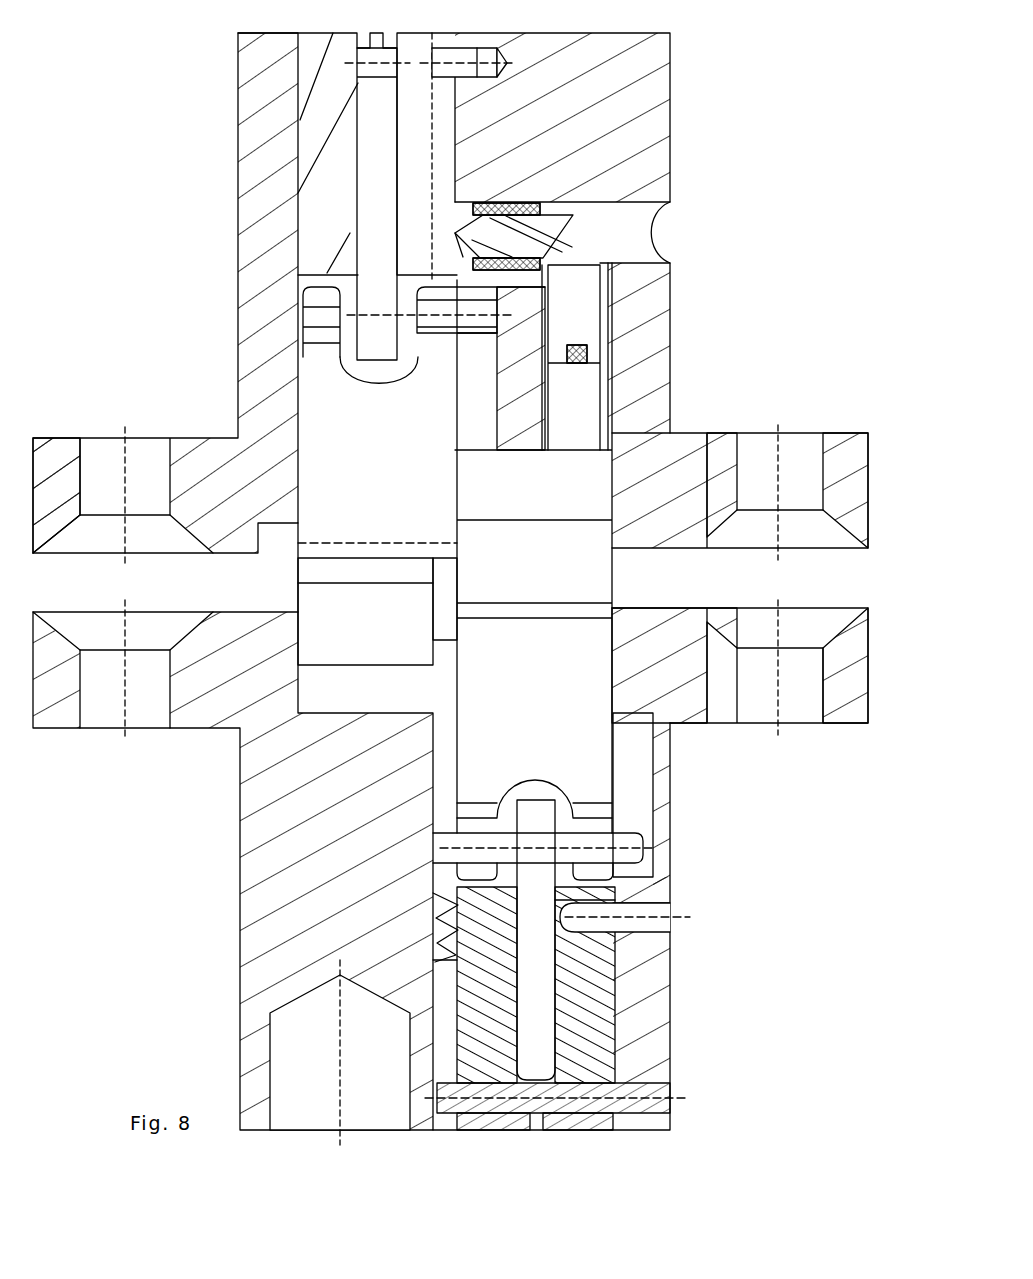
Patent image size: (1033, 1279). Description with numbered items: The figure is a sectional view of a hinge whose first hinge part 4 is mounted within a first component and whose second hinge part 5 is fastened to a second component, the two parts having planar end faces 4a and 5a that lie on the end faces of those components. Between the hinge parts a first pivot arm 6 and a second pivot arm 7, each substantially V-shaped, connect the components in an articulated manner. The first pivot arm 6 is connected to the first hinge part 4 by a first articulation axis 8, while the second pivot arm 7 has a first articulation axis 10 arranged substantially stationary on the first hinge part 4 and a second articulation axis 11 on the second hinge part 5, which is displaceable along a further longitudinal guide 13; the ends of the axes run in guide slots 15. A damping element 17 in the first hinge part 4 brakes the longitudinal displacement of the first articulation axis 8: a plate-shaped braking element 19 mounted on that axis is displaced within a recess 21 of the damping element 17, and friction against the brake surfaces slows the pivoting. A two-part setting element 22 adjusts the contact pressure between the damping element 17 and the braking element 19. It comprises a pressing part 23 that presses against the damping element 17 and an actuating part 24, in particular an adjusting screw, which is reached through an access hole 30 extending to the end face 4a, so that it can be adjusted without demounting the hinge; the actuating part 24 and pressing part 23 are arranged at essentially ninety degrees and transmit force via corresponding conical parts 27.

The first hinge part 4 is at (737, 116).
The end face of the first hinge part 4a is at (655, 548).
The second hinge part 5 is at (145, 812).
The end face of the second hinge part 5a is at (818, 608).
The first pivot arm 6 is at (365, 452).
The second pivot arm 7 is at (585, 472).
The first articulation axis 8 is at (340, 315).
The first articulation axis of the second pivot arm 10 is at (380, 200).
The second articulation axis 11 is at (627, 850).
The further longitudinal guide 13 is at (560, 1030).
The guide slots 15 is at (641, 810).
The damping element 17 is at (320, 125).
The braking element 19 is at (672, 1085).
The recess 21 is at (440, 922).
The setting element 22 is at (570, 237).
The pressing part 23 is at (570, 223).
The actuating part 24 is at (573, 312).
The conical parts 27 is at (560, 262).
The access hole 30 is at (589, 407).